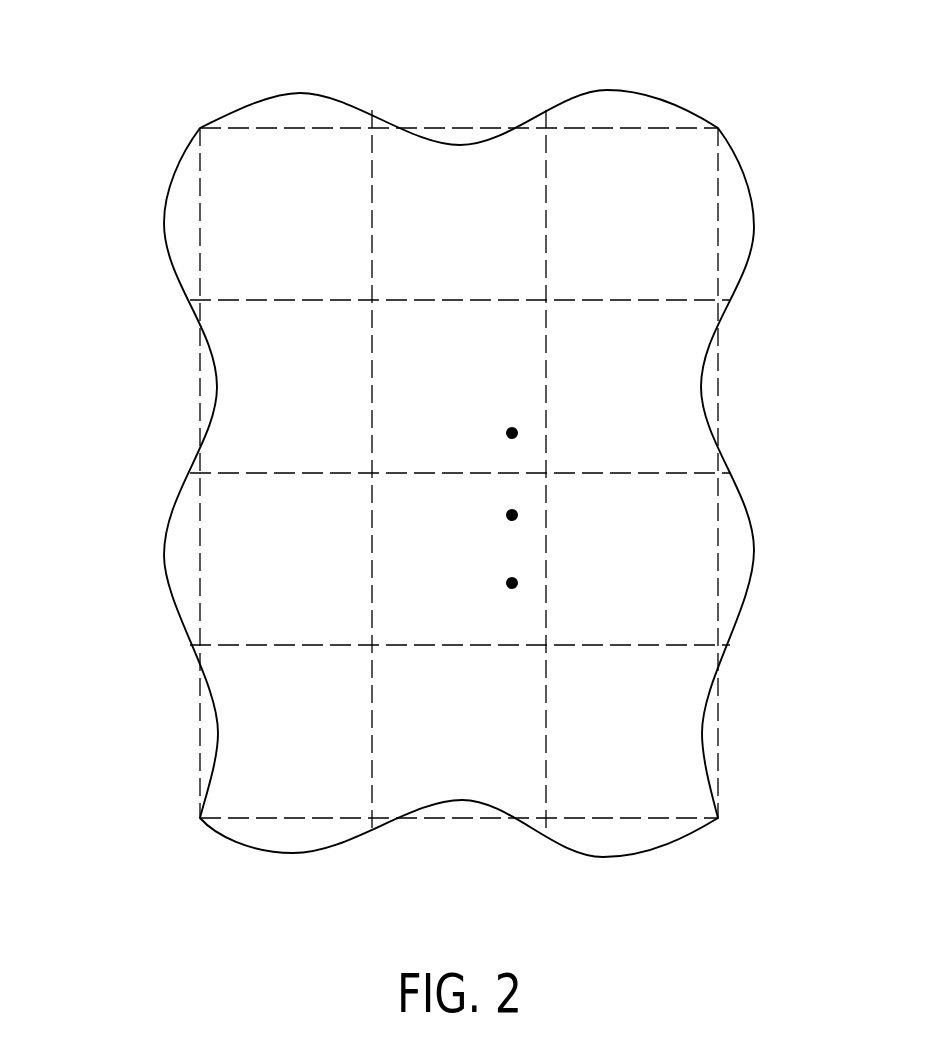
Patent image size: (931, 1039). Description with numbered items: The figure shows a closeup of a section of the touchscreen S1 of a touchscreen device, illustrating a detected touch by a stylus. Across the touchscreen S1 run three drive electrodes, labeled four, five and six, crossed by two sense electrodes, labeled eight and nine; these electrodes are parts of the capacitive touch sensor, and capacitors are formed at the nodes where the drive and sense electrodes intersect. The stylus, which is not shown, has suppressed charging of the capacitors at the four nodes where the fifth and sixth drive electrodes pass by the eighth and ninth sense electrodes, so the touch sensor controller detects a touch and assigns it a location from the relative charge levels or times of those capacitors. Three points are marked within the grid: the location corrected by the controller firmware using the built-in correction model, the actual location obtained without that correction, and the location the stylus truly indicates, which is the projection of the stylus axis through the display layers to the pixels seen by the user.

The touchscreen S1 is at (170, 192).